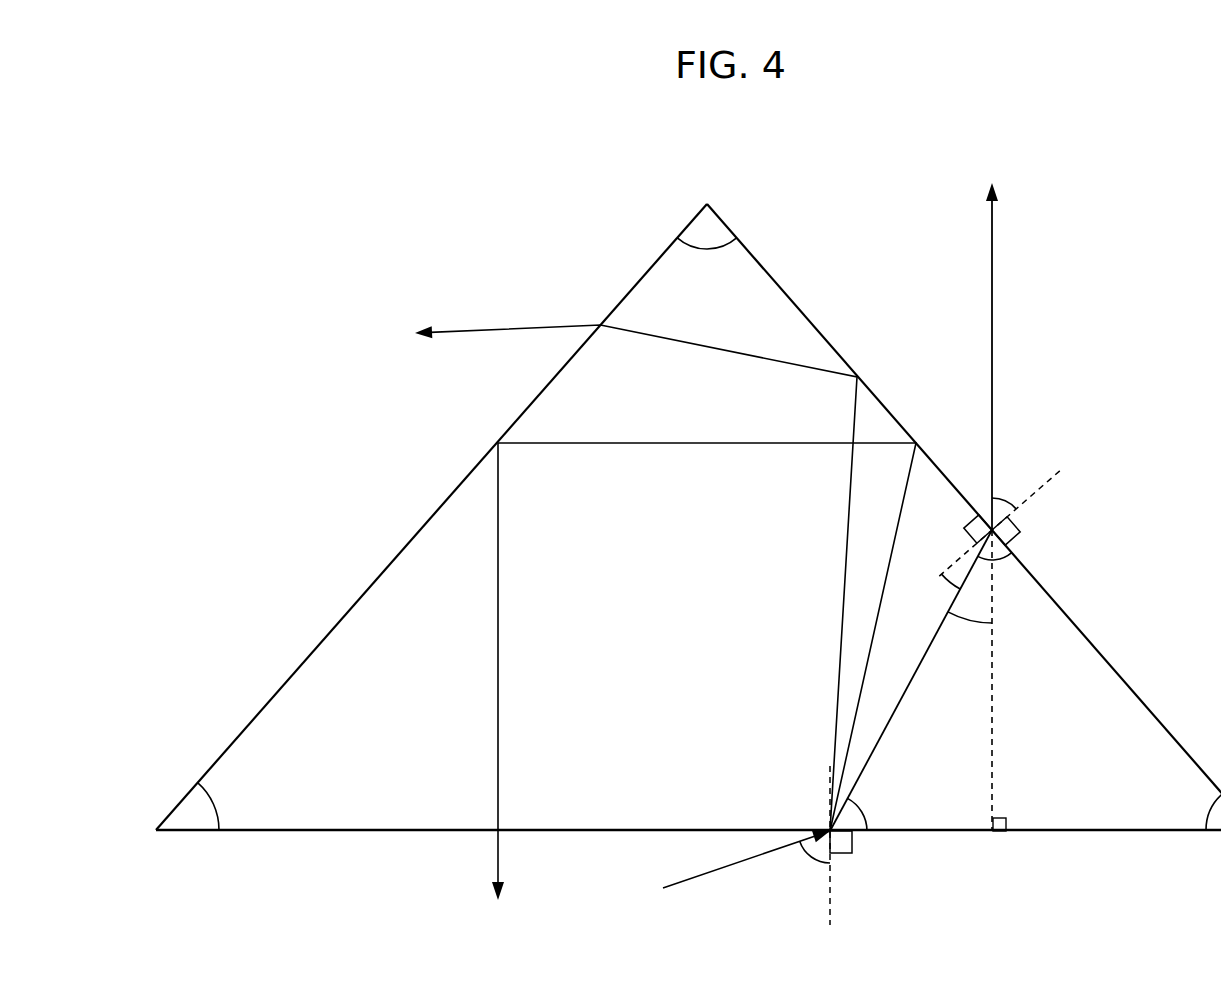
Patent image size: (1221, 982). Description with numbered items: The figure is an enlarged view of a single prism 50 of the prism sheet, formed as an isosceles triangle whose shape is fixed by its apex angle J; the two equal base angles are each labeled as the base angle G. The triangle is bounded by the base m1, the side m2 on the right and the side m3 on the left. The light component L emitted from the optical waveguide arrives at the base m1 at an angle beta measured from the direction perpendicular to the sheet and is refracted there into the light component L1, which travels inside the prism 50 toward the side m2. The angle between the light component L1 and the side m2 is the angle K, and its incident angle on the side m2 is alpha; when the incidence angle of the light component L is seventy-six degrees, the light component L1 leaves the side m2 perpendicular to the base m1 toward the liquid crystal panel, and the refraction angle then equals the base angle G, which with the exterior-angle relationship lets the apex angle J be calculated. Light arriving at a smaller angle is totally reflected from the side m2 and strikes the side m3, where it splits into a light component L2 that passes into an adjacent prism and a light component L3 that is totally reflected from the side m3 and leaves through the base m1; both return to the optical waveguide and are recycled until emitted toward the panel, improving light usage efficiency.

The prism 50 is at (719, 169).
The base m1 is at (955, 832).
The side m2 is at (1050, 594).
The side m3 is at (455, 490).
The light component L is at (738, 871).
The light component L1 is at (992, 495).
The light component L2 is at (618, 576).
The light component L3 is at (702, 689).
The base angle G is at (709, 648).
The apex angle J is at (706, 263).
The angle K is at (1003, 560).